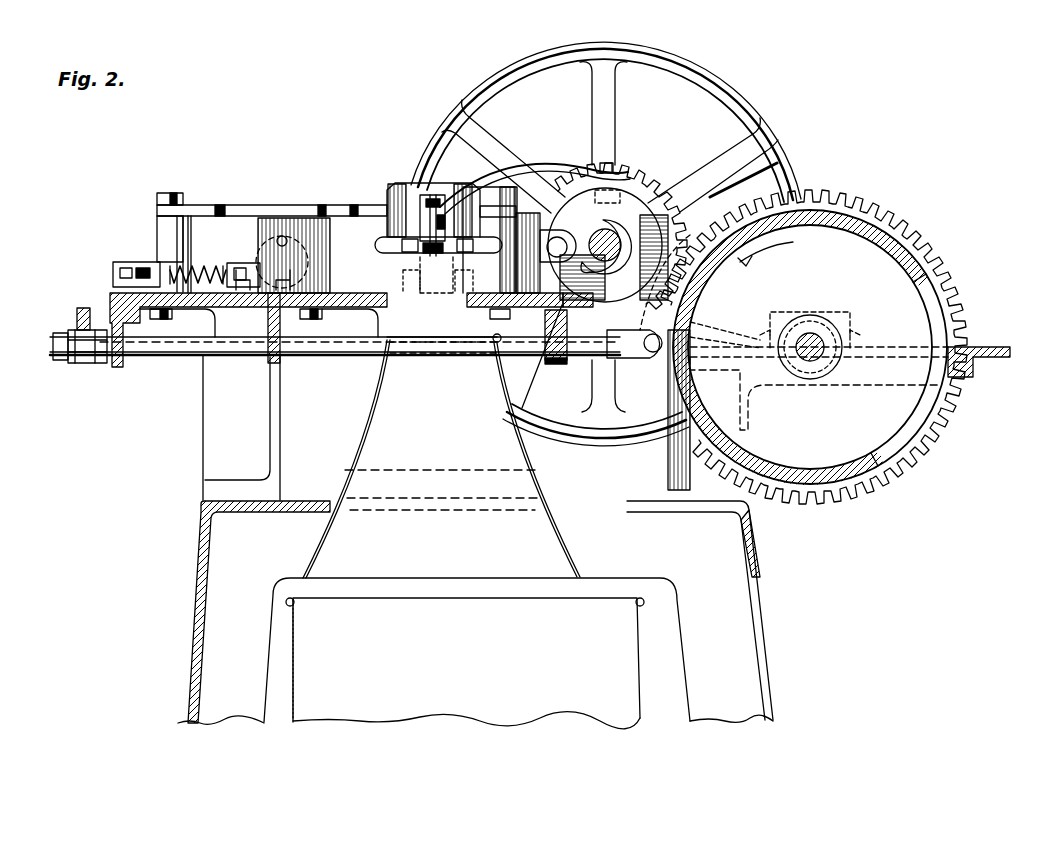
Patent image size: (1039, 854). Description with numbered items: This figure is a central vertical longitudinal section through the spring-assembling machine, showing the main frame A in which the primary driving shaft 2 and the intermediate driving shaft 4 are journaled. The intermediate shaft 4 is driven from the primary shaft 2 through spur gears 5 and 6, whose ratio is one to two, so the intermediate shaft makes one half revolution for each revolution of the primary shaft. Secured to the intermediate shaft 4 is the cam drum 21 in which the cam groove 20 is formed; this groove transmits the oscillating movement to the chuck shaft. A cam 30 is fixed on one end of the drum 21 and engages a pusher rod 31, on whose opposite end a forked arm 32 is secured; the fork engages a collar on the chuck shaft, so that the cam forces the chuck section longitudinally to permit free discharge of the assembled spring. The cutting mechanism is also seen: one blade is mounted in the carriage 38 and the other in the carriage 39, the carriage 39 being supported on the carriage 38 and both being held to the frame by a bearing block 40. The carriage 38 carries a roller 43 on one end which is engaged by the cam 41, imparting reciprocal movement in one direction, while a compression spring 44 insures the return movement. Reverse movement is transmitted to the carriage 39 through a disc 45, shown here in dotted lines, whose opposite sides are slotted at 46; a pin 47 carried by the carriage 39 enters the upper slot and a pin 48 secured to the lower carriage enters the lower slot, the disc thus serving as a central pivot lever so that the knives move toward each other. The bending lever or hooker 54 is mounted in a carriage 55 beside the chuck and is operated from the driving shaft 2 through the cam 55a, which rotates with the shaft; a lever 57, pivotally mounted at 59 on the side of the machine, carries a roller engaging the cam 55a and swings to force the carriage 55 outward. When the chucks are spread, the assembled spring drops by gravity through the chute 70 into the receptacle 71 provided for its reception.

The primary driving shaft 2 is at (633, 215).
The intermediate driving shaft 4 is at (812, 361).
The spur gear 5 is at (598, 188).
The spur gear 6 is at (920, 453).
The cam groove 20 is at (942, 312).
The cam drum 21 is at (893, 246).
The cam 30 is at (688, 432).
The pusher rod 31 is at (580, 368).
The forked arm 32 is at (68, 325).
The carriage 38 is at (501, 240).
The carriage 39 is at (420, 264).
The bearing block 40 is at (400, 190).
The cam 41 is at (614, 232).
The roller 43 is at (558, 228).
The compression spring 44 is at (203, 263).
The disc 45 is at (262, 262).
The slot 46 is at (285, 228).
The pin 47 is at (276, 240).
The pin 48 is at (288, 325).
The bending lever or hooker 54 is at (437, 198).
The carriage 55 is at (428, 207).
The cam 55a is at (655, 200).
The lever 57 is at (332, 205).
The pivot 59 is at (160, 200).
The chute 70 is at (374, 437).
The receptacle 71 is at (477, 653).
The main frame A is at (195, 437).